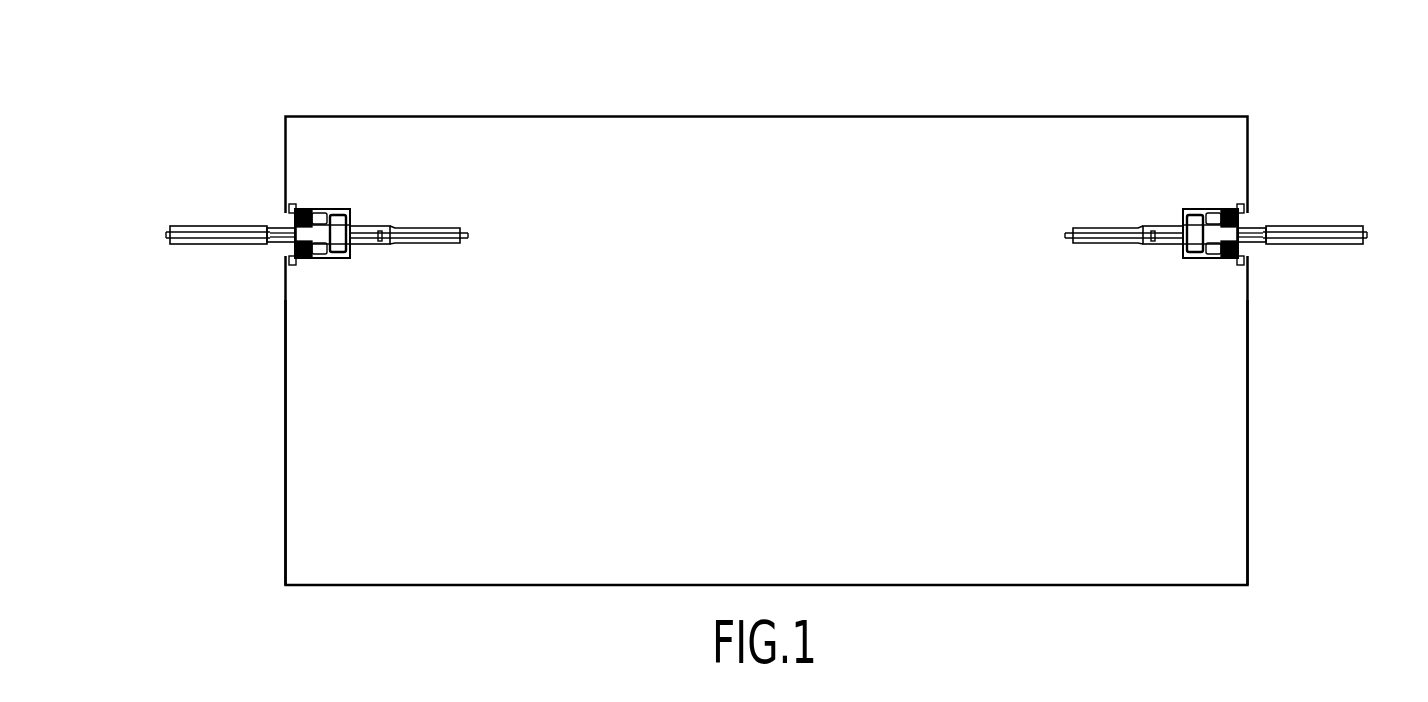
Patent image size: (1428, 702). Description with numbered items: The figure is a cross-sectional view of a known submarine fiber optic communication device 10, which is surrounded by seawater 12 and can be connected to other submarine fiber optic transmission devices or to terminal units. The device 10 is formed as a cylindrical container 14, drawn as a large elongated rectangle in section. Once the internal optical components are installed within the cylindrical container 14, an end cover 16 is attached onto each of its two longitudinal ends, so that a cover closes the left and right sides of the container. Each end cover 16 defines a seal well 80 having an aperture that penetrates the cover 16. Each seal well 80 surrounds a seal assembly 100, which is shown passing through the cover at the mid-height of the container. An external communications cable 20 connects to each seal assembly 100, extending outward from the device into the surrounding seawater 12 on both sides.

The submarine fiber optic communication device 10 is at (1168, 114).
The seawater 12 is at (171, 424).
The cylindrical container 14 is at (1018, 116).
The end cover 16 is at (274, 485).
The external communications cable 20 is at (215, 224).
The seal well 80 is at (336, 209).
The seal assembly 100 is at (338, 259).